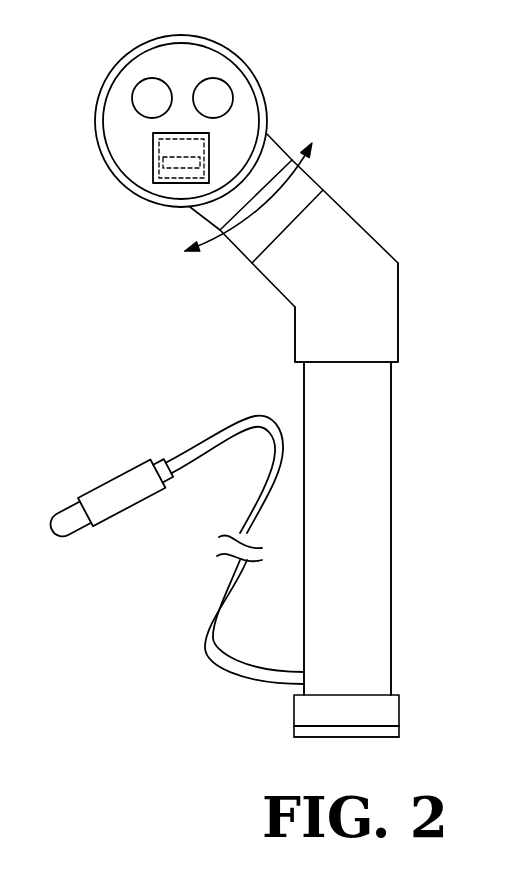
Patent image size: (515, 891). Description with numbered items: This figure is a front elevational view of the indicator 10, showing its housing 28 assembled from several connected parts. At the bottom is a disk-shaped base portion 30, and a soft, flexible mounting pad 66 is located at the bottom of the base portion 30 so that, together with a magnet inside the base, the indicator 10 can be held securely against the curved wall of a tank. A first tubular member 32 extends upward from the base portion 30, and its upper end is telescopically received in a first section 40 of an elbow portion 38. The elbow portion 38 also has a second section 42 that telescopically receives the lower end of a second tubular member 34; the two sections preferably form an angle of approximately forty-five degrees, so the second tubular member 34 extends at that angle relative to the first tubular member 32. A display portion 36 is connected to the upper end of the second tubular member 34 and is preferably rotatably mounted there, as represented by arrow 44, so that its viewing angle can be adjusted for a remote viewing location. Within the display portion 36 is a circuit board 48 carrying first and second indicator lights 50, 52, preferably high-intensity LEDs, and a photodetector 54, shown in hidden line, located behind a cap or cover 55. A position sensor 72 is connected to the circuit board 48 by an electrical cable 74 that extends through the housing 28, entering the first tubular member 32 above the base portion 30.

The indicator 10 is at (430, 162).
The housing 28 is at (402, 412).
The disk-shaped base portion 30 is at (400, 710).
The first tubular member 32 is at (392, 480).
The second tubular member 34 is at (315, 181).
The display portion 36 is at (191, 35).
The elbow portion 38 is at (400, 273).
The first section 40 is at (390, 320).
The second section 42 is at (340, 227).
The arrow 44 is at (228, 243).
The circuit board 48 is at (128, 147).
The first indicator light 50 is at (147, 103).
The second indicator light 52 is at (217, 100).
The photodetector 54 is at (179, 166).
The cap or cover 55 is at (153, 167).
The mounting pad 66 is at (295, 728).
The position sensor 72 is at (110, 495).
The electrical cable 74 is at (210, 620).